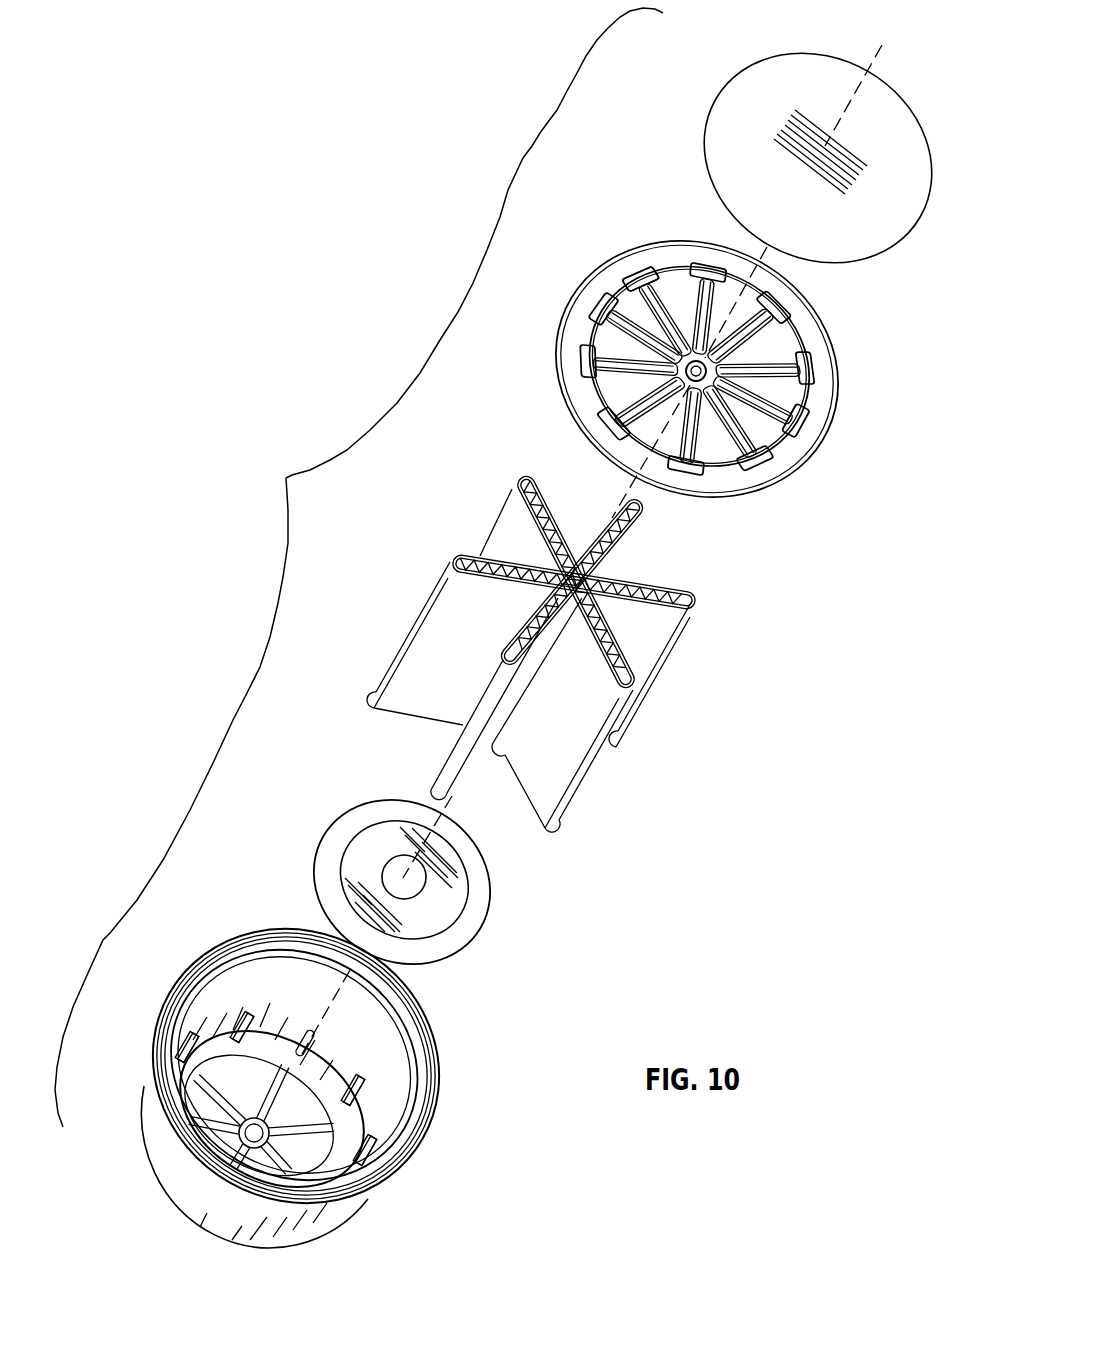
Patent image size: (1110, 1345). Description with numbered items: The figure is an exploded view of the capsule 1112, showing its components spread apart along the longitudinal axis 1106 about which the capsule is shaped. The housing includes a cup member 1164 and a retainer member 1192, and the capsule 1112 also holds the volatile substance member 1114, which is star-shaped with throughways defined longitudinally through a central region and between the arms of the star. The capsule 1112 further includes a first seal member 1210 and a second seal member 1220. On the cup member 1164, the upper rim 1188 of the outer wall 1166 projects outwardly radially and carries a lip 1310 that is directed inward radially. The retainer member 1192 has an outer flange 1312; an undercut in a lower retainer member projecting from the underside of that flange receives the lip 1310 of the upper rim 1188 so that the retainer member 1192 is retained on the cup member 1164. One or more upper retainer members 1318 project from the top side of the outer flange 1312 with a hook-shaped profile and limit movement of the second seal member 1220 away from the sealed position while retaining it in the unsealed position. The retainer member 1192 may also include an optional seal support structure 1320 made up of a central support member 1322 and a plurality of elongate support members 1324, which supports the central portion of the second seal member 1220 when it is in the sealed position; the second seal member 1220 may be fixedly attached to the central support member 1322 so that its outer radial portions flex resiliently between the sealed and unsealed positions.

The longitudinal axis 1106 is at (884, 56).
The capsule 1112 is at (286, 477).
The volatile substance member 1114 is at (692, 582).
The cup member 1164 is at (317, 1227).
The outer wall 1166 is at (242, 1213).
The upper rim 1188 is at (436, 1093).
The retainer member 1192 is at (699, 365).
The first seal member 1210 is at (332, 816).
The second seal member 1220 is at (810, 70).
The lip 1310 is at (307, 1070).
The outer flange 1312 is at (793, 453).
The upper retainer members 1318 is at (656, 254).
The seal support structure 1320 is at (757, 357).
The central support member 1322 is at (713, 378).
The elongate support members 1324 is at (657, 292).